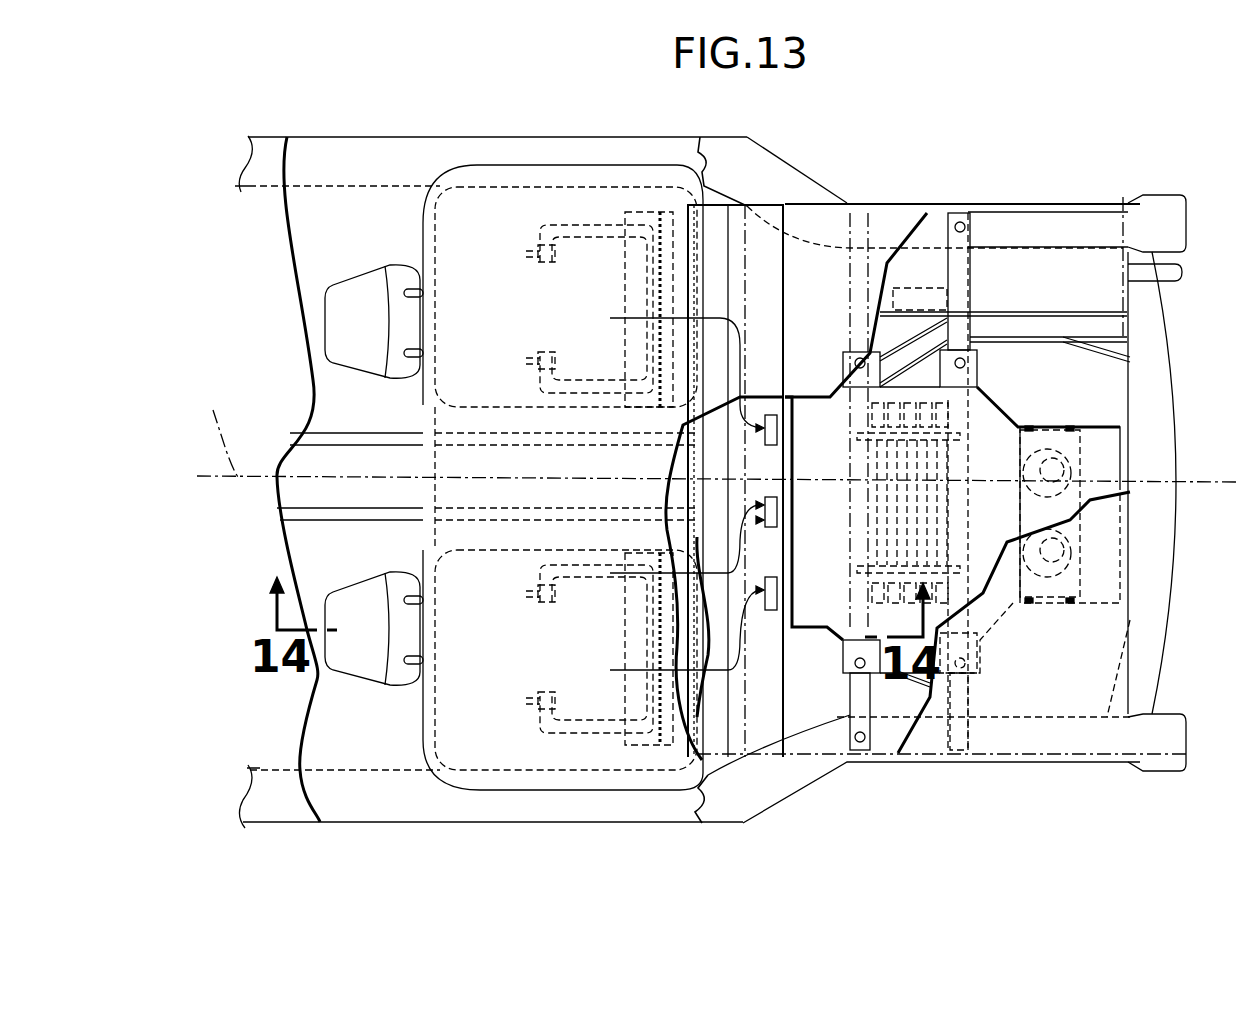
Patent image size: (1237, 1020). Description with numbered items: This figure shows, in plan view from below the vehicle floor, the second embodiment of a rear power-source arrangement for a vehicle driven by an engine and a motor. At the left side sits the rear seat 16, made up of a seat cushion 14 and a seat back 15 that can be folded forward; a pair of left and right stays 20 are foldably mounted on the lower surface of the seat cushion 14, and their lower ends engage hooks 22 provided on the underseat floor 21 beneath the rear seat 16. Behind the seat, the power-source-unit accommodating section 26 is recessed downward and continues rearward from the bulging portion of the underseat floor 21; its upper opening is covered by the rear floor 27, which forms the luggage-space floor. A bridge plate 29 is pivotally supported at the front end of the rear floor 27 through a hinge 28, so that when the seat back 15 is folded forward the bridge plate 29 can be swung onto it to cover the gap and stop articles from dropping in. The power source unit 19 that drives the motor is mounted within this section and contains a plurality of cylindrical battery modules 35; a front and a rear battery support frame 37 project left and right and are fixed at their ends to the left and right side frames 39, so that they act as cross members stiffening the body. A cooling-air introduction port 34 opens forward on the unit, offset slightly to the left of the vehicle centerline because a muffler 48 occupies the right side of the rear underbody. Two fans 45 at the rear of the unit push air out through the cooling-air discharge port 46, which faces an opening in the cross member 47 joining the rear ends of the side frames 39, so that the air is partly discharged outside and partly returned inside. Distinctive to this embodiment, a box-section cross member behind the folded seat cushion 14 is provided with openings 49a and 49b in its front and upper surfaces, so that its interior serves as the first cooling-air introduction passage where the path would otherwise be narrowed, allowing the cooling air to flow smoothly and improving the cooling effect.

The seat cushion 14 is at (420, 715).
The seat back 15 is at (453, 423).
The rear seat 16 is at (407, 250).
The power source unit 19 is at (1000, 395).
The stays 20 is at (597, 233).
The underseat floor 21 is at (408, 562).
The hooks 22 is at (612, 320).
The power-source-unit accommodating section 26 is at (1078, 401).
The rear floor 27 is at (1060, 677).
The hinge 28 is at (782, 263).
The bridge plate 29 is at (750, 227).
The cooling-air introduction port 34 is at (777, 613).
The battery modules 35 is at (915, 558).
The battery support frames 37 is at (953, 267).
The side frames 39 is at (262, 137).
The fans 45 is at (1023, 460).
The cooling-air discharge port 46 is at (1121, 456).
The cross member 47 is at (1166, 391).
The muffler 48 is at (1020, 212).
The opening 49a is at (700, 330).
The opening 49b is at (768, 500).